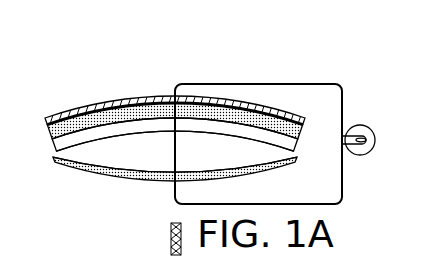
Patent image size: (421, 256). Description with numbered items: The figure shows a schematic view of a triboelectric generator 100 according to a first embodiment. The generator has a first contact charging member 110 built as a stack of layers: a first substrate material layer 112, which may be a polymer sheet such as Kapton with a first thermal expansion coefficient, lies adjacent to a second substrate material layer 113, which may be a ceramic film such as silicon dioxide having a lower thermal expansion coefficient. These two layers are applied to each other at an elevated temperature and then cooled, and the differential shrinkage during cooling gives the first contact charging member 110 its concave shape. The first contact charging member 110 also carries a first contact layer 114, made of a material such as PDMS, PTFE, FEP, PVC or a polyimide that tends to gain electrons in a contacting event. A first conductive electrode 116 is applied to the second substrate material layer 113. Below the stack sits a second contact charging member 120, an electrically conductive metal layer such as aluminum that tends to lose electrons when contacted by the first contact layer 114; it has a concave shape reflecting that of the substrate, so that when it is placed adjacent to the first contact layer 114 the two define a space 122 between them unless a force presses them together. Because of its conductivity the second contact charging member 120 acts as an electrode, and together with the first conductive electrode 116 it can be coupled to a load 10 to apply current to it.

The triboelectric generator 100 is at (378, 47).
The load 10 is at (355, 127).
The first contact charging member 110 is at (171, 104).
The first substrate material layer 112 is at (138, 107).
The second substrate material layer 113 is at (268, 112).
The first contact layer 114 is at (152, 125).
The first conductive electrode 116 is at (113, 102).
The second contact charging member 120 is at (107, 179).
The space 122 is at (178, 162).